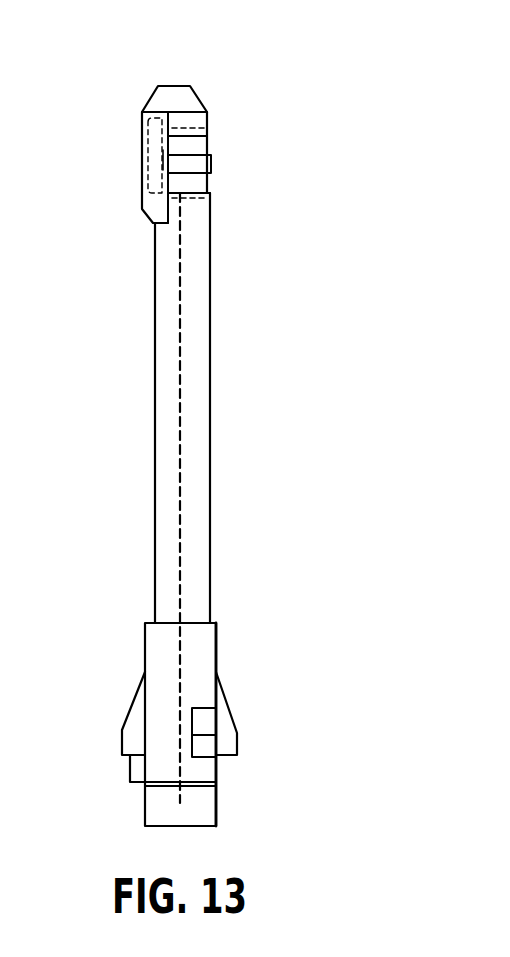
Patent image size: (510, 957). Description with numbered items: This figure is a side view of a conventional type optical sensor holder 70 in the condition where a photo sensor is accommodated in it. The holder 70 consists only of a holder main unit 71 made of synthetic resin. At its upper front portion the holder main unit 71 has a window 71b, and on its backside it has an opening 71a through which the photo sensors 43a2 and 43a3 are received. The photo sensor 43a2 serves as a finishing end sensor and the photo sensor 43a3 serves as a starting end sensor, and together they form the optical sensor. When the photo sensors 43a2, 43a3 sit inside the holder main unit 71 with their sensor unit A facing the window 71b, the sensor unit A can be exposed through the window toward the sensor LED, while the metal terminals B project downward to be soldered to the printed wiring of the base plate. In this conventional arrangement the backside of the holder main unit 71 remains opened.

The conventional type optical sensor holder 70 is at (234, 425).
The holder main unit 71 is at (234, 425).
The opening 71a is at (210, 267).
The window 71b is at (147, 190).
The photo sensor 43a2 is at (302, 498).
The photo sensor 43a3 is at (183, 352).
The sensor unit A is at (150, 152).
The metal terminal B is at (183, 475).